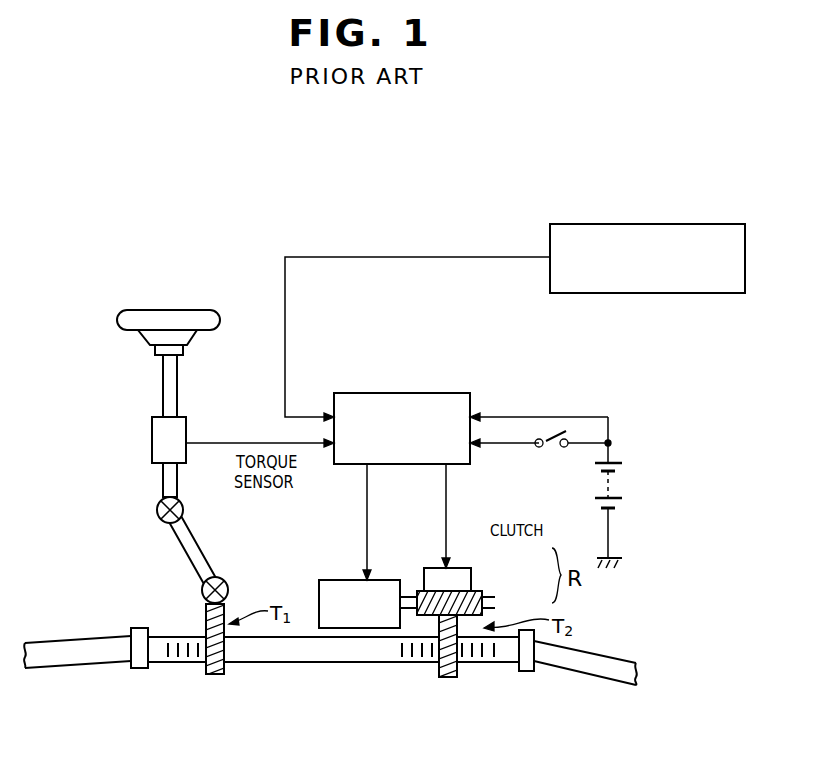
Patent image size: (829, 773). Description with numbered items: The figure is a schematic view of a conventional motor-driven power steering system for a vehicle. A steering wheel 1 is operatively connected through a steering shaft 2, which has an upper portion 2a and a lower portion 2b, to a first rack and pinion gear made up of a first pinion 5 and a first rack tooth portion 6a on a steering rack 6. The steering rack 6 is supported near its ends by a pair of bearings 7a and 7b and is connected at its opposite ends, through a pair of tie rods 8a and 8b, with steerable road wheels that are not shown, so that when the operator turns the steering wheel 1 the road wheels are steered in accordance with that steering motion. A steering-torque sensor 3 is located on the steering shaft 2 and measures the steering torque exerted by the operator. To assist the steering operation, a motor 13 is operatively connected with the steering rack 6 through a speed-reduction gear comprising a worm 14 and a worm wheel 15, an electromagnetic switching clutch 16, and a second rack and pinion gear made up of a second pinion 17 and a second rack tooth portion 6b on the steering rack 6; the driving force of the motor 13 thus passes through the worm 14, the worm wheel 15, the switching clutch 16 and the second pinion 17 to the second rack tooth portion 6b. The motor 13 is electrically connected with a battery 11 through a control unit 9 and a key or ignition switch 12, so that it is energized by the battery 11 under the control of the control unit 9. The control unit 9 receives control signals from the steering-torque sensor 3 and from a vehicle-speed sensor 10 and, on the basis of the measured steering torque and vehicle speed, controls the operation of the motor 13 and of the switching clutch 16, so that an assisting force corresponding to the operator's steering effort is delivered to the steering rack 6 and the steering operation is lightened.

The steering wheel 1 is at (120, 320).
The steering shaft 2 is at (170, 479).
The upper portion 2a is at (178, 379).
The lower portion 2b is at (190, 546).
The steering-torque sensor 3 is at (186, 453).
The first pinion 5 is at (218, 676).
The steering rack 6 is at (305, 663).
The first rack tooth portion 6a is at (258, 663).
The second rack tooth portion 6b is at (408, 663).
The bearing 7a is at (140, 669).
The bearing 7b is at (526, 673).
The tie rod 8a is at (63, 663).
The tie rod 8b is at (588, 669).
The control unit 9 is at (402, 393).
The vehicle-speed sensor 10 is at (641, 224).
The battery 11 is at (613, 482).
The key or ignition switch 12 is at (552, 448).
The motor 13 is at (331, 580).
The worm 14 is at (497, 601).
The worm wheel 15 is at (483, 591).
The switching clutch 16 is at (462, 568).
The second pinion 17 is at (451, 678).